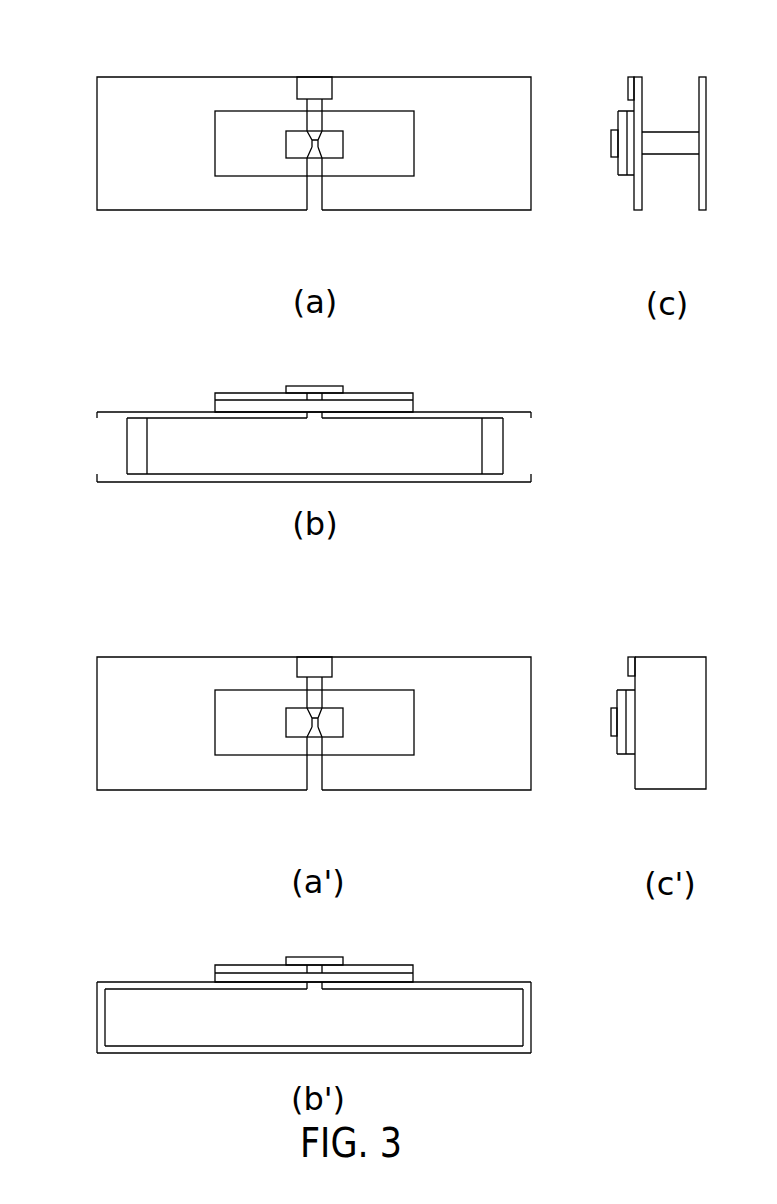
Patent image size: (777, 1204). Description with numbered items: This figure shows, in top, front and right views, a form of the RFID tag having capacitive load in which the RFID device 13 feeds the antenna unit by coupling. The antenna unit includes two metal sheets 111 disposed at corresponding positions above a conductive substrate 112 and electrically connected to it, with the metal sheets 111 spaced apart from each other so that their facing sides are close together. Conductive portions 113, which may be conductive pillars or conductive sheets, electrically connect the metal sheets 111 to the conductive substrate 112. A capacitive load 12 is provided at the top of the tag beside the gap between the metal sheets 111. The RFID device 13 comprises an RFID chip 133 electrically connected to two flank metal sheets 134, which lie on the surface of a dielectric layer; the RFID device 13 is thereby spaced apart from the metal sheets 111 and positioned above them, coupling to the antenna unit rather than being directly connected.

The metal sheet 111 is at (183, 92).
The conductive substrate 112 is at (163, 481).
The conductive portion 113 is at (137, 445).
The capacitive load 12 is at (310, 84).
The RFID device 13 is at (163, 245).
The RFID chip 133 is at (297, 150).
The flank metal sheet 134 is at (235, 162).